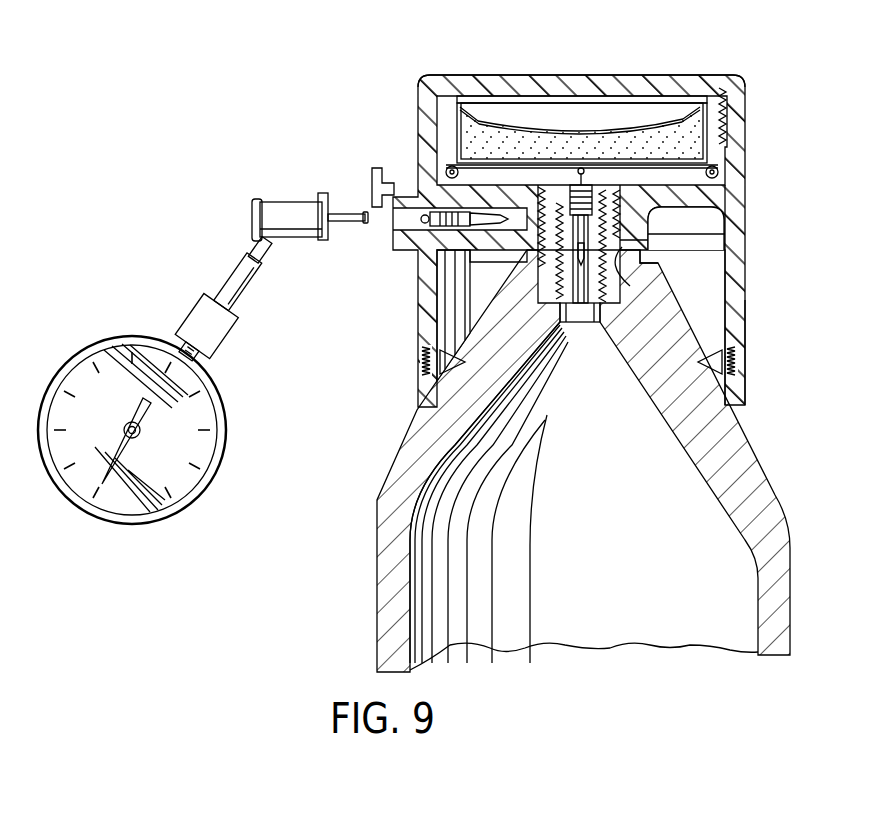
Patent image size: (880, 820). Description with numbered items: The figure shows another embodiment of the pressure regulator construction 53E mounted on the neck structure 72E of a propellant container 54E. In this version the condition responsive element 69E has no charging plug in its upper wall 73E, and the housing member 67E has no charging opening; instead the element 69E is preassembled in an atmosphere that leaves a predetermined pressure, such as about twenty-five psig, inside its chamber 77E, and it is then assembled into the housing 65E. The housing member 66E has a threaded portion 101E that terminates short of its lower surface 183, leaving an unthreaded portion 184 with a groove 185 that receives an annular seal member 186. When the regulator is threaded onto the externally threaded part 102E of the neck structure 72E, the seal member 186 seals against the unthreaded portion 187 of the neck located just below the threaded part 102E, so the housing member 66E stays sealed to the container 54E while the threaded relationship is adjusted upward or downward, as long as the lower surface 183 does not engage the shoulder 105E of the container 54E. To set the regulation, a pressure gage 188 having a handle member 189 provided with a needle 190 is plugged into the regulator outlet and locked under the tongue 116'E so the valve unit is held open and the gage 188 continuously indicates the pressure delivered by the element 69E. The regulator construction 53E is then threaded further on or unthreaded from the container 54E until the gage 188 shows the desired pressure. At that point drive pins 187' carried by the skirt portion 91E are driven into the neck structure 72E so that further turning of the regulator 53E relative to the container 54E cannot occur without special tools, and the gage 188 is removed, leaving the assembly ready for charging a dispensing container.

The pressure regulator construction 53E is at (754, 74).
The container 54E is at (768, 458).
The housing 65E is at (740, 259).
The housing member 66E is at (733, 200).
The housing member 67E is at (661, 97).
The condition responsive element 69E is at (601, 108).
The neck structure 72E is at (670, 312).
The upper wall 73E is at (511, 130).
The chamber 77E is at (437, 136).
The skirt portion 91E is at (747, 389).
The threaded portion 101E is at (482, 315).
The externally threaded part 102E is at (610, 223).
The shoulder 105E is at (560, 308).
The tongue 116'E is at (348, 171).
The lower surface 183 is at (645, 252).
The unthreaded portion 184 is at (640, 232).
The groove 185 is at (725, 233).
The annular seal member 186 is at (630, 286).
The unthreaded portion 187 is at (579, 268).
The drive pins 187' is at (582, 362).
The pressure gage 188 is at (222, 460).
The handle member 189 is at (278, 212).
The needle 190 is at (352, 220).